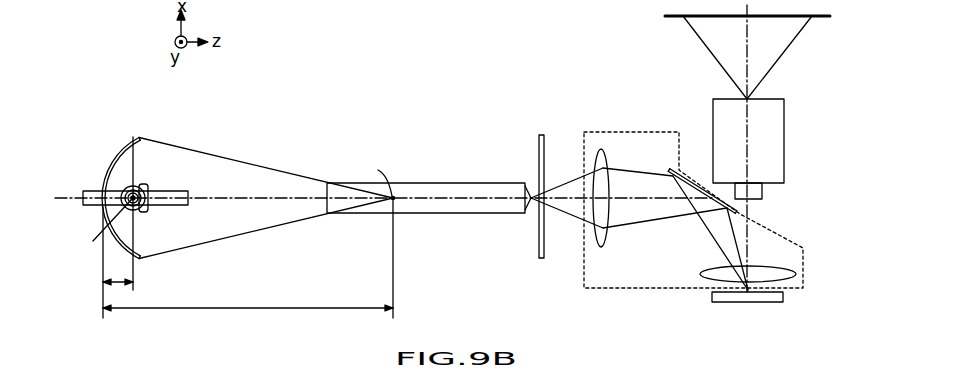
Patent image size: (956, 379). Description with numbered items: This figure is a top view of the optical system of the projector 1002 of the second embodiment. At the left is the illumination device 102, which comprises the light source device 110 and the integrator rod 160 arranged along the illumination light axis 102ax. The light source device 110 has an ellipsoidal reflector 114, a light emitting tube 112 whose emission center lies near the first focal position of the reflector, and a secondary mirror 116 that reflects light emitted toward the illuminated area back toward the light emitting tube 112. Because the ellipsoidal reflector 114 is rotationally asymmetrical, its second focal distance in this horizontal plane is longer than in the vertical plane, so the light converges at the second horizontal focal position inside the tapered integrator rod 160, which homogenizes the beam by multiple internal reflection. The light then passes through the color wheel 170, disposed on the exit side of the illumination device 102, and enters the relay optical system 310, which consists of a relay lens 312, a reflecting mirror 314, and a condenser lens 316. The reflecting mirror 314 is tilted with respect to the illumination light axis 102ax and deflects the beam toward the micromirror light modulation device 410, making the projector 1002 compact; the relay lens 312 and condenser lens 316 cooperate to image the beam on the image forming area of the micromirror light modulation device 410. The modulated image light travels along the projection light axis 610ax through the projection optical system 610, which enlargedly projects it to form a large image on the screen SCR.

The projector 1002 is at (447, 43).
The illumination device 102 is at (527, 92).
The illumination light axis 102ax is at (71, 190).
The light source device 110 is at (213, 113).
The light emitting tube 112 is at (133, 188).
The ellipsoidal reflector 114 is at (118, 153).
The secondary mirror 116 is at (146, 184).
The integrator rod 160 is at (447, 183).
The color wheel 170 is at (540, 260).
The relay optical system 310 is at (620, 130).
The relay lens 312 is at (600, 248).
The reflecting mirror 314 is at (668, 169).
The condenser lens 316 is at (700, 275).
The micromirror light modulation device 410 is at (711, 296).
The projection optical system 610 is at (777, 98).
The projection light axis 610ax is at (749, 205).
The screen SCR is at (672, 18).